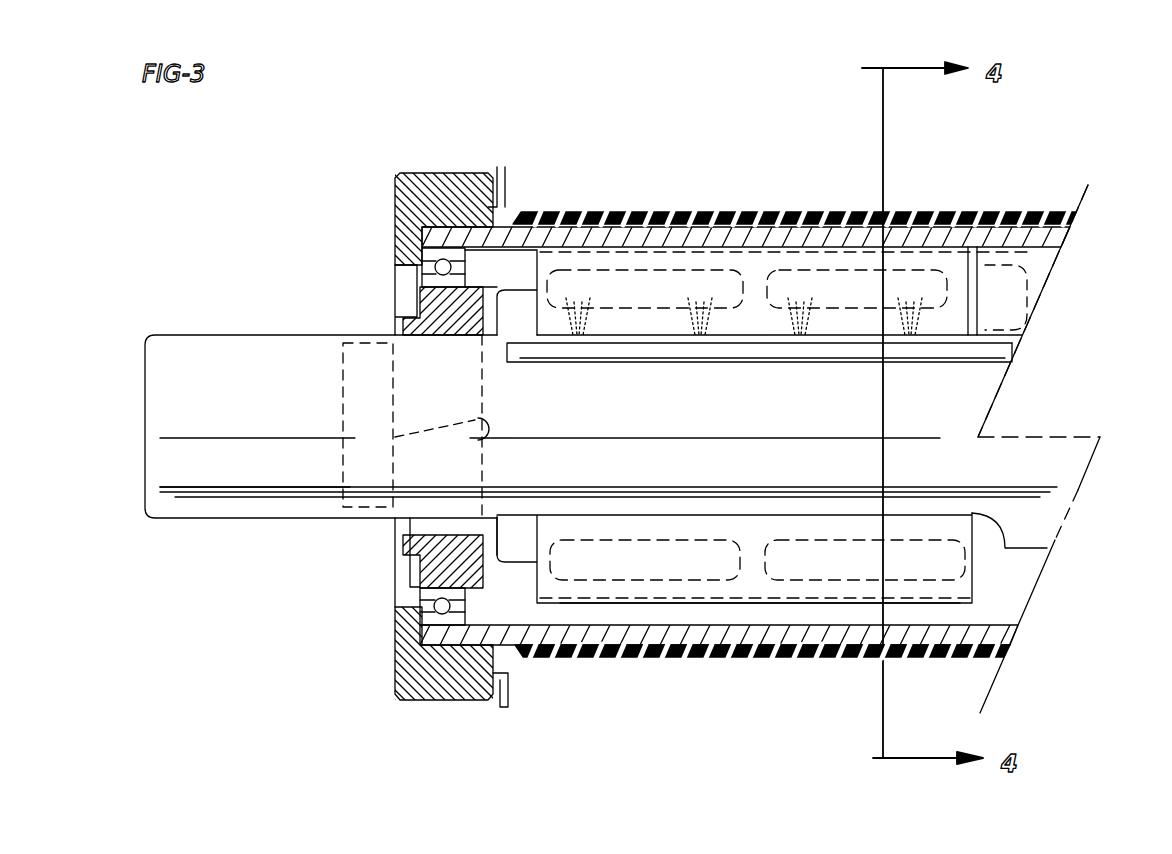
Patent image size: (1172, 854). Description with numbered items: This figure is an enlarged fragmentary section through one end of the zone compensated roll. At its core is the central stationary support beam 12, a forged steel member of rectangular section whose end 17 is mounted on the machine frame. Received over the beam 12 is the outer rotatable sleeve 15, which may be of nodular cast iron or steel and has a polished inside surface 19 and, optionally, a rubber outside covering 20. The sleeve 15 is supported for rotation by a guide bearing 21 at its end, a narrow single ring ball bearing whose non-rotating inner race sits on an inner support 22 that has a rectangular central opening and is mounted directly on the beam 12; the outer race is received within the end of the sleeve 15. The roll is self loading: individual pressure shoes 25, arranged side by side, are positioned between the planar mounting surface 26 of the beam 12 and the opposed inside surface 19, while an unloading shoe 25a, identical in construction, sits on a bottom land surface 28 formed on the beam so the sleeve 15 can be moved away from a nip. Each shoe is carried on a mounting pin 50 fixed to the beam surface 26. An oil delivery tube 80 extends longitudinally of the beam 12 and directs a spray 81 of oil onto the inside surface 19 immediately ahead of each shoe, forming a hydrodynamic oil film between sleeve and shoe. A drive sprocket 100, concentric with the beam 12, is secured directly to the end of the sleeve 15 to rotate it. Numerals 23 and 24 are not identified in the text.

The central stationary support beam 12 is at (262, 402).
The outer rotatable sleeve 15 is at (645, 212).
The beam end 17 is at (255, 520).
The inside surface 19 is at (502, 258).
The rubber outside covering 20 is at (718, 212).
The guide bearing 21 is at (415, 283).
The inner support 22 is at (403, 560).
The key 23 is at (343, 470).
The bore 24 is at (497, 428).
The pressure shoe 25 is at (792, 212).
The unloading shoe 25a is at (750, 585).
The mounting surface 26 is at (1016, 346).
The bottom land surface 28 is at (708, 520).
The mounting pin 50 is at (1022, 300).
The oil delivery tube 80 is at (688, 350).
The oil spray 81 is at (768, 343).
The drive sprocket 100 is at (395, 206).